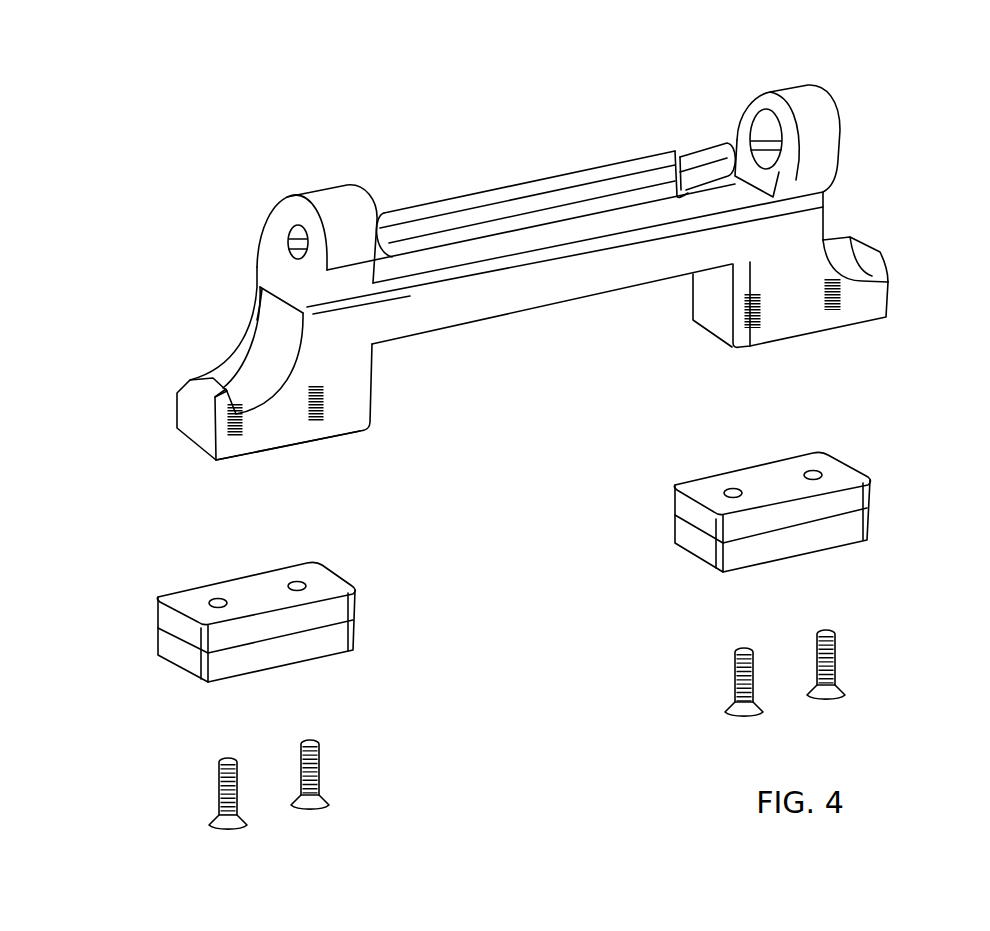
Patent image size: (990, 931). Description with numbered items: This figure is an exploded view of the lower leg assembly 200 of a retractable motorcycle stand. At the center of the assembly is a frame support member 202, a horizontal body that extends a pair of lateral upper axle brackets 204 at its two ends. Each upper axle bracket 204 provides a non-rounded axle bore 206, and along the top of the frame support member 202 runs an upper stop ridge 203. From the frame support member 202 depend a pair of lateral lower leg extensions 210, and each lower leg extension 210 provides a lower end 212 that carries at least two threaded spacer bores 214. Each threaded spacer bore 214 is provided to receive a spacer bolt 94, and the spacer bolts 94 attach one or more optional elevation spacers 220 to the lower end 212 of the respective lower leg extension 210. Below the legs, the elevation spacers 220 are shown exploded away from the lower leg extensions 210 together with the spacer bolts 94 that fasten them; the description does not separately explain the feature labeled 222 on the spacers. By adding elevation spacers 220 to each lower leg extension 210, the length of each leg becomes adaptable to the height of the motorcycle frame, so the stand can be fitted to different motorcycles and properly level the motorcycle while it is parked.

The lower leg assembly 200 is at (262, 136).
The frame support member 202 is at (557, 291).
The upper stop ridge 203 is at (610, 228).
The lateral upper axle bracket 204 is at (818, 143).
The non-rounded axle bore 206 is at (291, 238).
The lateral lower leg extension 210 is at (340, 397).
The lower end 212 is at (307, 443).
The threaded spacer bore 214 is at (327, 418).
The elevation spacer 220 is at (547, 567).
The hole 222 is at (303, 583).
The spacer bolt 94 is at (327, 808).